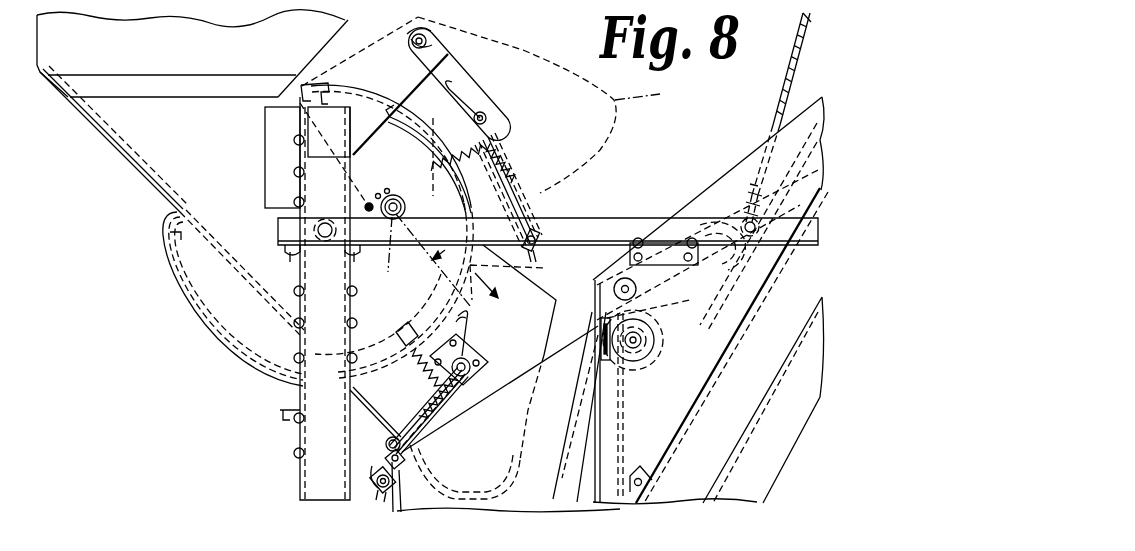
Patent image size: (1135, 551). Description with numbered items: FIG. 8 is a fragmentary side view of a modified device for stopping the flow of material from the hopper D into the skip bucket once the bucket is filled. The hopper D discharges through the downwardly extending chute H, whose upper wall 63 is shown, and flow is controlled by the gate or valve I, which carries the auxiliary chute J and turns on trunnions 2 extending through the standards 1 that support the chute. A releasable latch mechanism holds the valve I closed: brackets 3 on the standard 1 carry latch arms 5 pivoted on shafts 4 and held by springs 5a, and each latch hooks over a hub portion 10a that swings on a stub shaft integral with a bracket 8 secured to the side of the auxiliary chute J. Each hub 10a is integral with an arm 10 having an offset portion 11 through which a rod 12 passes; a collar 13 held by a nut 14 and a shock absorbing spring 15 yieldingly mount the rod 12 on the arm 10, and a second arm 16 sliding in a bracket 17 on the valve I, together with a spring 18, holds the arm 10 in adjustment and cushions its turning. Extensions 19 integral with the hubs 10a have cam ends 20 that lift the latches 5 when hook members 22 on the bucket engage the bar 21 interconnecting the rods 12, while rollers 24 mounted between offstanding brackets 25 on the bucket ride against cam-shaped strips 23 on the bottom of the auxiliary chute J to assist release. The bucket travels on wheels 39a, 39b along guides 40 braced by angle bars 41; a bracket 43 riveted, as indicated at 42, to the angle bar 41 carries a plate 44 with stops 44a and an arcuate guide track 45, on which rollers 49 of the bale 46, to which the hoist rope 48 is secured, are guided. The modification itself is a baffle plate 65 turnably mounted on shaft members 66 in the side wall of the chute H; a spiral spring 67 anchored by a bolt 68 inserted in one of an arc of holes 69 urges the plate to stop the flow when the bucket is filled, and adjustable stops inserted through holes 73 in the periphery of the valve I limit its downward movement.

The standards 1 is at (300, 472).
The trunnions 2 is at (318, 229).
The brackets 3 is at (378, 72).
The shafts 4 is at (430, 38).
The latch arms 5 is at (480, 90).
The spring 5a is at (416, 38).
The brackets 8 is at (445, 352).
The arms 10 is at (500, 165).
The hub portions 10a is at (493, 122).
The offset portion 11 is at (530, 198).
The rod 12 is at (518, 183).
The collar 13 is at (470, 380).
The nut 14 is at (470, 370).
The shock absorbing spring 15 is at (500, 147).
The second arm 16 is at (398, 334).
The bracket 17 is at (403, 330).
The spring 18 is at (398, 384).
The extensions 19 is at (476, 348).
The cam ends 20 is at (437, 261).
The bar 21 is at (545, 238).
The hook members 22 is at (378, 486).
The cam-shaped strips 23 is at (482, 510).
The rollers 24 is at (390, 441).
The offstanding brackets 25 is at (390, 457).
The wheels 39a is at (663, 334).
The lever 39b is at (655, 322).
The guides 40 is at (773, 450).
The angle bars 41 is at (620, 230).
The rivet 42 is at (692, 238).
The bracket 43 is at (657, 255).
The plate 44 is at (708, 300).
The stops 44a is at (590, 378).
The arcuate guide tracks 45 is at (740, 283).
The bale 46 is at (565, 490).
The hoist rope 48 is at (790, 75).
The rollers 49 is at (735, 265).
The upper wall 63 is at (318, 79).
The baffle plate 65 is at (446, 120).
The shaft members 66 is at (395, 197).
The spiral spring 67 is at (385, 255).
The bolt 68 is at (366, 204).
The holes 69 is at (381, 190).
The holes 73 is at (519, 280).
The hopper D is at (192, 53).
The chute H is at (153, 168).
The gate or valve I is at (232, 331).
The auxiliary chute J is at (557, 300).